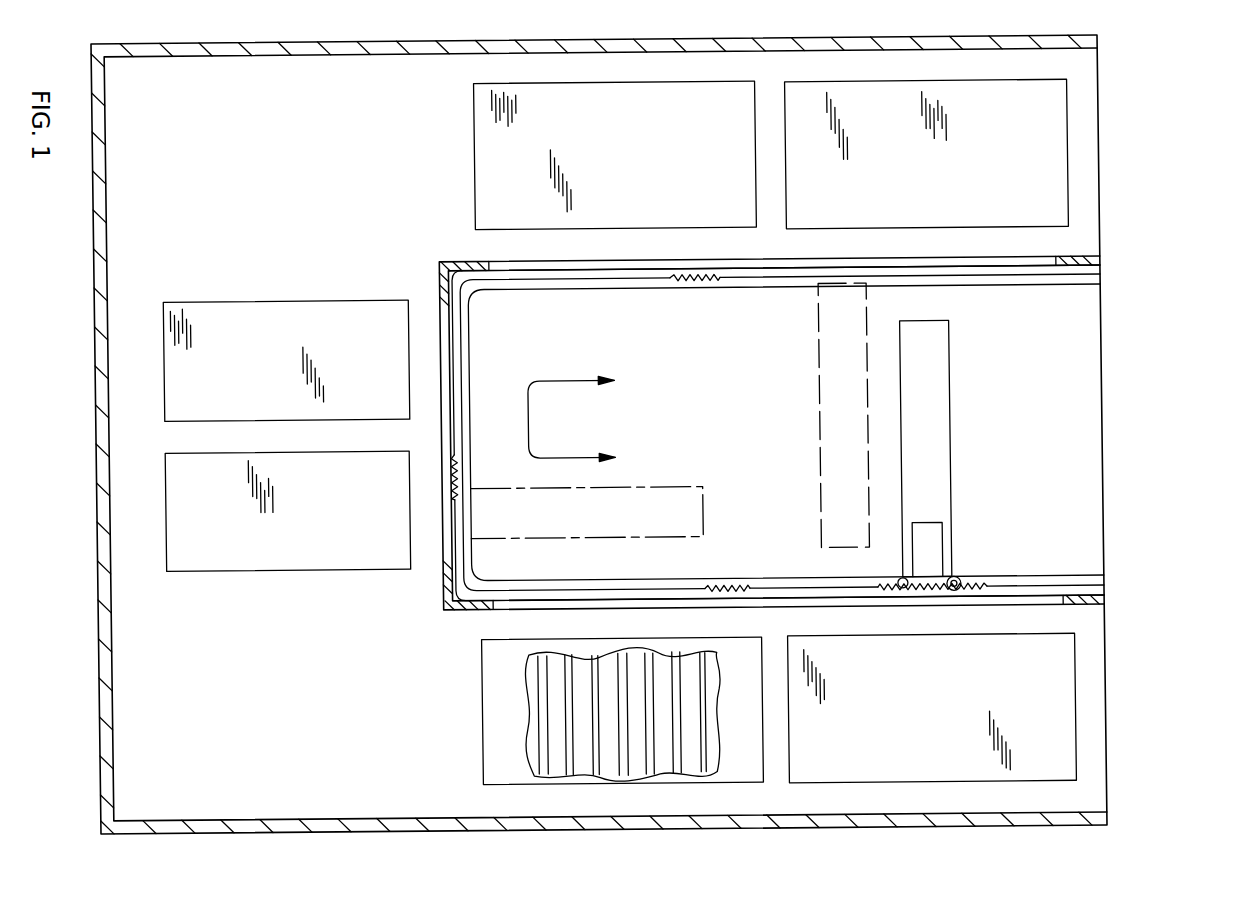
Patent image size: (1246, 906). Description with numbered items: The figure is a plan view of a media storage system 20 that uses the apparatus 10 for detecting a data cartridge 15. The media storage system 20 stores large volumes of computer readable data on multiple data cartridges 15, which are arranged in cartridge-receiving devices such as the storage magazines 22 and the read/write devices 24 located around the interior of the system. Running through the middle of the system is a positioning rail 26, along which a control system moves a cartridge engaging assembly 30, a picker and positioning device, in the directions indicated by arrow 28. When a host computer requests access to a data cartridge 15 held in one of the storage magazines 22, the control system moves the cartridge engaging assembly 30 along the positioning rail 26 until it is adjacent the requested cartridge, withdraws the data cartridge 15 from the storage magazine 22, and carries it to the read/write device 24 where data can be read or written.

The apparatus for detecting a data cartridge 10 is at (1040, 88).
The data cartridge 15 is at (501, 738).
The media storage system 20 is at (117, 0).
The storage magazine 22 is at (646, 44).
The read/write device 24 is at (266, 436).
The positioning rail 26 is at (978, 538).
The arrow 28 is at (572, 419).
The cartridge engaging assembly 30 is at (882, 407).